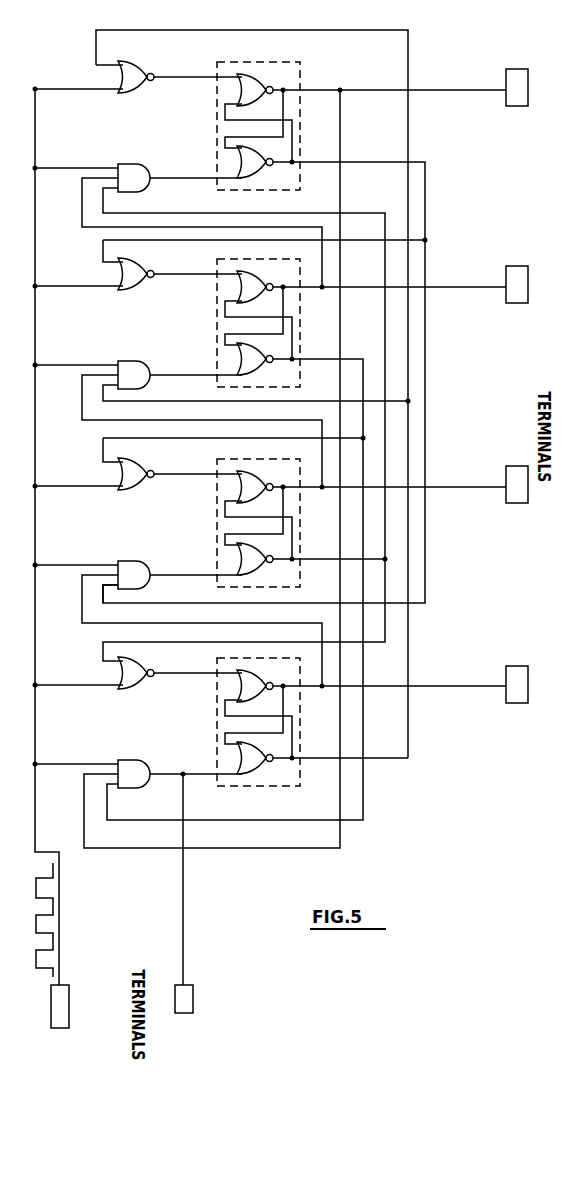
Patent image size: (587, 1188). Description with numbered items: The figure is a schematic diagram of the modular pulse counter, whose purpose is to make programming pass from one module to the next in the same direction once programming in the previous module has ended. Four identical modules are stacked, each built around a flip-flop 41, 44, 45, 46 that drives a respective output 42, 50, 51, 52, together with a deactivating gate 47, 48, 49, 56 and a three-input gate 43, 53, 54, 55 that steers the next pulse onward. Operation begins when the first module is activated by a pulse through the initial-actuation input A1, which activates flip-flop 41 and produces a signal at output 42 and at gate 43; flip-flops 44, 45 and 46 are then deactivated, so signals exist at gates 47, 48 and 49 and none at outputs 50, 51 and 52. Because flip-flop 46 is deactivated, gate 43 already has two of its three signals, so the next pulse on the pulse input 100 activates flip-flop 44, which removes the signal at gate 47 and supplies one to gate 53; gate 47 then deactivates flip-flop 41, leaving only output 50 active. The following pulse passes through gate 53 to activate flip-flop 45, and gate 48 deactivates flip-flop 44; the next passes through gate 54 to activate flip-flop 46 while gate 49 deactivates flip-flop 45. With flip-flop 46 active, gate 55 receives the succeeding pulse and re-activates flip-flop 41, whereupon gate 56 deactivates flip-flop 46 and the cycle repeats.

The flip-flop 41 is at (298, 780).
The output 42 is at (506, 697).
The gate 43 is at (141, 547).
The flip-flop 44 is at (298, 580).
The flip-flop 45 is at (298, 380).
The flip-flop 46 is at (297, 183).
The gate 47 is at (135, 689).
The gate 48 is at (135, 490).
The gate 49 is at (135, 290).
The output 50 is at (506, 497).
The output 51 is at (506, 300).
The output 52 is at (506, 101).
The gate 53 is at (142, 343).
The gate 54 is at (142, 150).
The gate 55 is at (142, 748).
The gate 56 is at (142, 49).
The clock input terminal 100 is at (70, 1010).
The input terminal A1 is at (193, 1005).